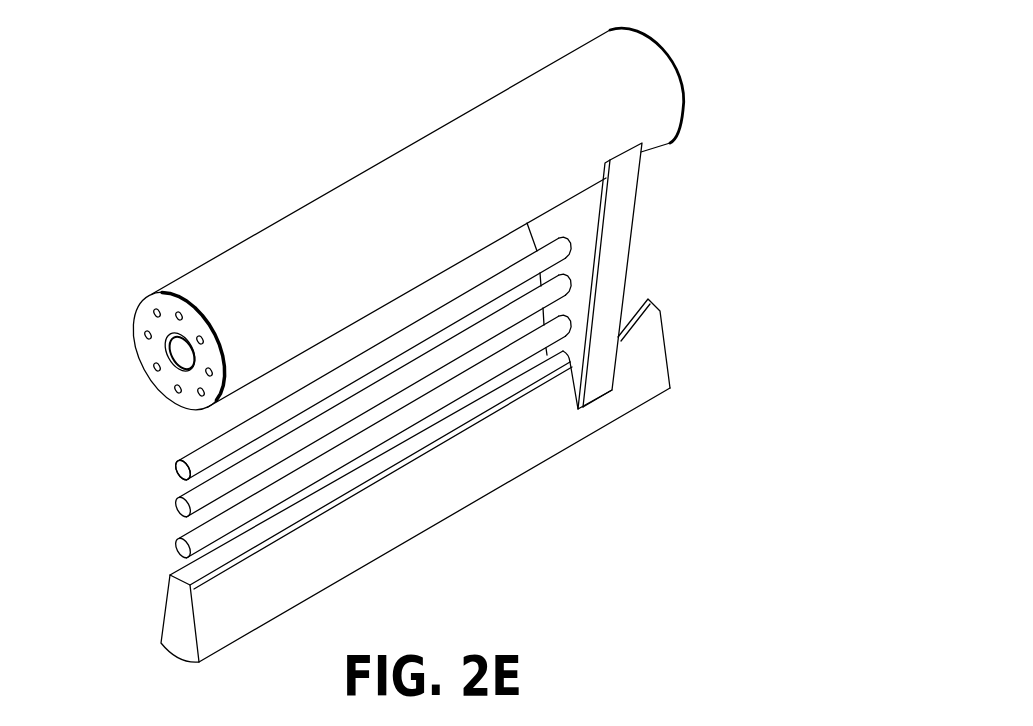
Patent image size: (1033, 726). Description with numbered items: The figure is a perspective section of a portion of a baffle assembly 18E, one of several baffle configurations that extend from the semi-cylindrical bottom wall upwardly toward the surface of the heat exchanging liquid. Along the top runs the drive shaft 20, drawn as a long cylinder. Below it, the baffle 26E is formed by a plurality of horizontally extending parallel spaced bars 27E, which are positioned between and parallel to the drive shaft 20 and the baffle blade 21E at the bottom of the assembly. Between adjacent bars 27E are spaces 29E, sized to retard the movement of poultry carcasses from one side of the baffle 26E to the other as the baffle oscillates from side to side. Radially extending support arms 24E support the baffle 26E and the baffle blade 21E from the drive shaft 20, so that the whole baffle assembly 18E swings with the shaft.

The drive shaft 20 is at (399, 226).
The support arm 24E is at (656, 276).
The space 29E is at (282, 504).
The baffle 26E is at (110, 489).
The bar 27E is at (175, 485).
The baffle assembly 18E is at (371, 488).
The baffle blade 21E is at (173, 633).